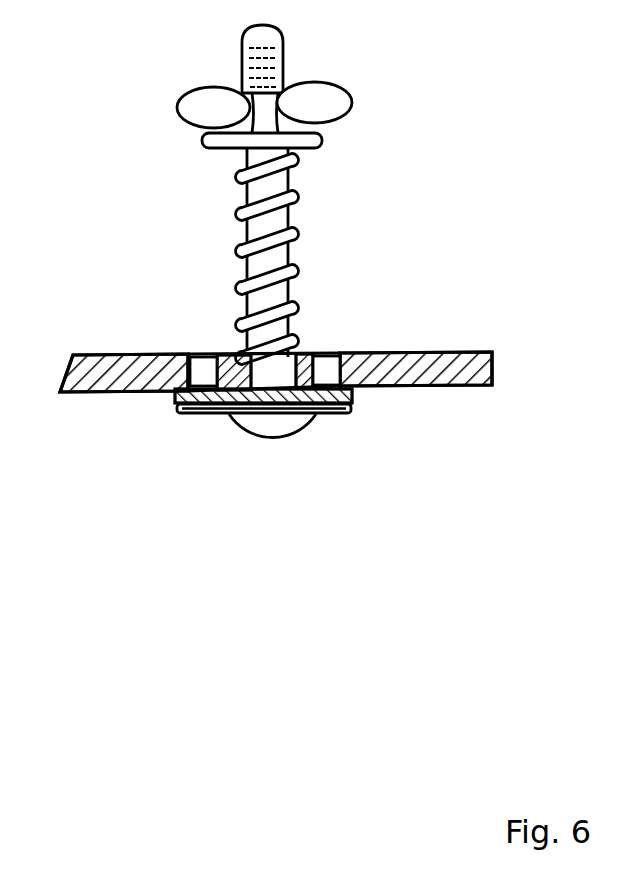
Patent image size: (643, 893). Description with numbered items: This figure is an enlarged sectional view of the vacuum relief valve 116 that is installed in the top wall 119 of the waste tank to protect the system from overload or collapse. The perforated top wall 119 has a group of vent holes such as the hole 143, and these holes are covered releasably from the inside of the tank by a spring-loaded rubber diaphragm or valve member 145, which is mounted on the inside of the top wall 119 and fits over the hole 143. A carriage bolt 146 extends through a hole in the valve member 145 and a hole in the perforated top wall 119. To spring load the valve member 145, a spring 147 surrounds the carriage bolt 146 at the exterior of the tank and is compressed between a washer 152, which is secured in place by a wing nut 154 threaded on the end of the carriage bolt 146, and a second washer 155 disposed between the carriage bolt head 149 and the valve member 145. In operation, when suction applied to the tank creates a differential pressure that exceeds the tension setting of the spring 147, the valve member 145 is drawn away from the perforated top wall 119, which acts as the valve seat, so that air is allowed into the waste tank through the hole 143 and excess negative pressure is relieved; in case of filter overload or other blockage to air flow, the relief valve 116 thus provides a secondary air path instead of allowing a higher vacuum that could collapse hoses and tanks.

The wing nut 154 is at (177, 108).
The washer 152 is at (285, 146).
The spring 147 is at (305, 225).
The carriage bolt 146 is at (305, 282).
The top wall 119 is at (158, 355).
The hole 143 is at (328, 370).
The washer 155 is at (180, 412).
The carriage bolt head 149 is at (276, 434).
The valve member 145 is at (314, 421).
The vacuum relief valve 116 is at (308, 472).